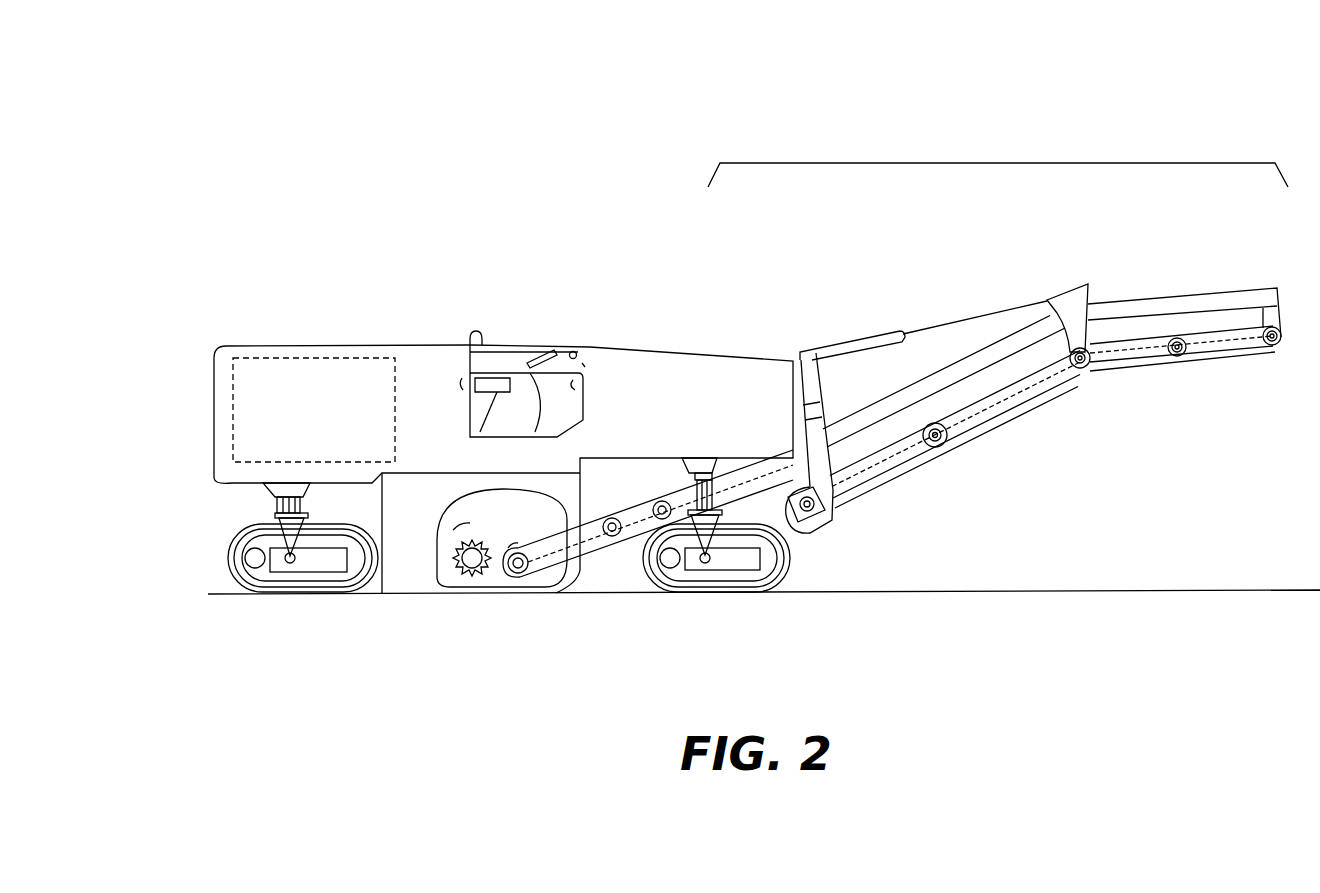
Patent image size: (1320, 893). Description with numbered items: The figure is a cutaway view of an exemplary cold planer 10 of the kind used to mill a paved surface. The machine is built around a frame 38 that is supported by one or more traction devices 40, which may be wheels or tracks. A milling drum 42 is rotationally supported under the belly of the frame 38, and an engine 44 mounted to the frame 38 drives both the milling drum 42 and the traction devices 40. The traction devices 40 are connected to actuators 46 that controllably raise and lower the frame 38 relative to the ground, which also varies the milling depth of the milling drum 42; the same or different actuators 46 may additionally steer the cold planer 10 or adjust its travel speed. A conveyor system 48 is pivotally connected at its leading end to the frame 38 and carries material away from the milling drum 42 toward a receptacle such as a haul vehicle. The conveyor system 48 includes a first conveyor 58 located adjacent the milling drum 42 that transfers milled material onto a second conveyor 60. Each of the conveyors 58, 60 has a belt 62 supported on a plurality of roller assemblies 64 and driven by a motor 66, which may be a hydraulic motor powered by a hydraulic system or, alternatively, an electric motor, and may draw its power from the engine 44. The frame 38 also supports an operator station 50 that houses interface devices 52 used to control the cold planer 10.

The cold planer 10 is at (340, 135).
The frame 38 is at (700, 372).
The traction devices 40 is at (378, 584).
The milling drum 42 is at (477, 577).
The engine 44 is at (270, 358).
The actuators 46 is at (280, 527).
The conveyor system 48 is at (1003, 163).
The operator station 50 is at (508, 300).
The interface devices 52 is at (535, 345).
The first conveyor 58 is at (613, 570).
The second conveyor 60 is at (994, 472).
The belt 62 is at (640, 506).
The roller assemblies 64 is at (940, 447).
The motor 66 is at (835, 507).